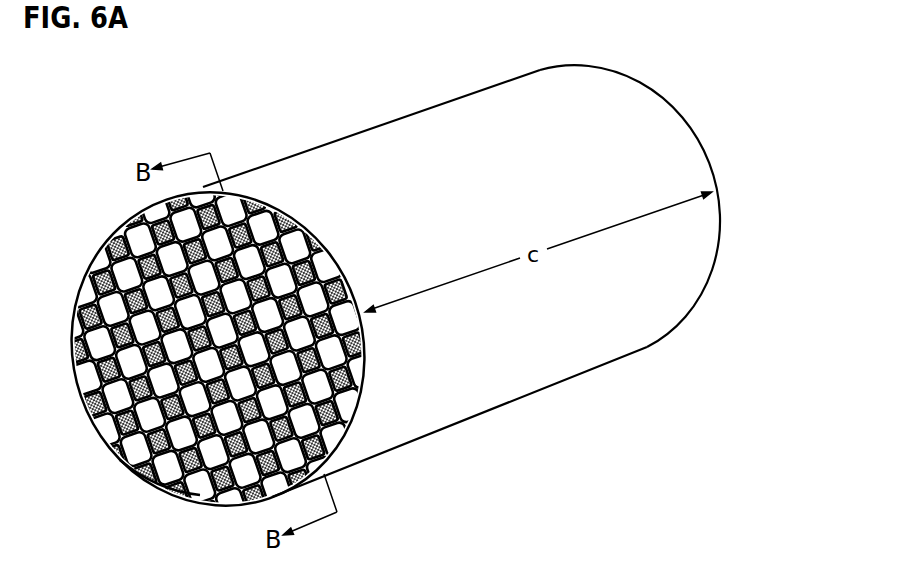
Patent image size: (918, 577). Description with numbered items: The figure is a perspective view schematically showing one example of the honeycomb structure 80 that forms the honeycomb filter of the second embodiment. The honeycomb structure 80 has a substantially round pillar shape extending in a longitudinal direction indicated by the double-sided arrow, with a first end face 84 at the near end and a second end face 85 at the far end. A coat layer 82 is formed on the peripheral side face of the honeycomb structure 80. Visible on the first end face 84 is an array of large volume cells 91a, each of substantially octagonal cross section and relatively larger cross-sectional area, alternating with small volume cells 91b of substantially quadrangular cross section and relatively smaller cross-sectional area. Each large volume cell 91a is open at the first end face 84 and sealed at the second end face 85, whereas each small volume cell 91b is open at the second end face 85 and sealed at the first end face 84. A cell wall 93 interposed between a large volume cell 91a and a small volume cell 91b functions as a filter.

The honeycomb structure 80 is at (297, 140).
The coat layer 82 is at (98, 258).
The first end face 84 is at (93, 362).
The second end face 85 is at (706, 122).
The large volume cell 91a is at (309, 430).
The small volume cell 91b is at (334, 418).
The cell wall 93 is at (197, 477).